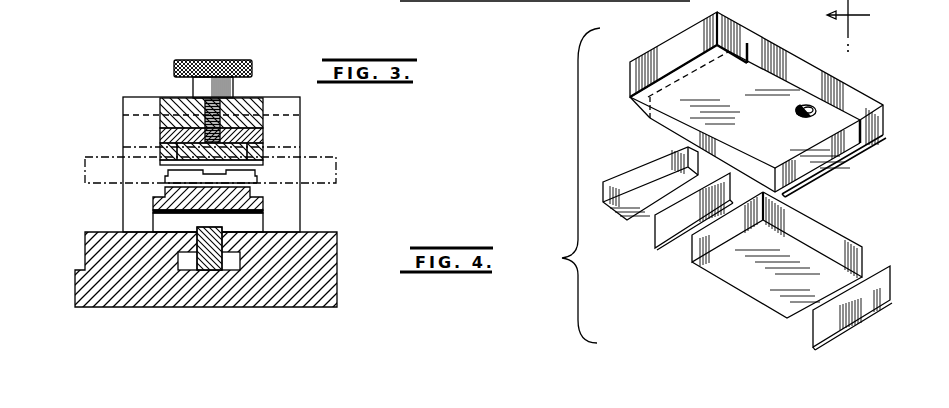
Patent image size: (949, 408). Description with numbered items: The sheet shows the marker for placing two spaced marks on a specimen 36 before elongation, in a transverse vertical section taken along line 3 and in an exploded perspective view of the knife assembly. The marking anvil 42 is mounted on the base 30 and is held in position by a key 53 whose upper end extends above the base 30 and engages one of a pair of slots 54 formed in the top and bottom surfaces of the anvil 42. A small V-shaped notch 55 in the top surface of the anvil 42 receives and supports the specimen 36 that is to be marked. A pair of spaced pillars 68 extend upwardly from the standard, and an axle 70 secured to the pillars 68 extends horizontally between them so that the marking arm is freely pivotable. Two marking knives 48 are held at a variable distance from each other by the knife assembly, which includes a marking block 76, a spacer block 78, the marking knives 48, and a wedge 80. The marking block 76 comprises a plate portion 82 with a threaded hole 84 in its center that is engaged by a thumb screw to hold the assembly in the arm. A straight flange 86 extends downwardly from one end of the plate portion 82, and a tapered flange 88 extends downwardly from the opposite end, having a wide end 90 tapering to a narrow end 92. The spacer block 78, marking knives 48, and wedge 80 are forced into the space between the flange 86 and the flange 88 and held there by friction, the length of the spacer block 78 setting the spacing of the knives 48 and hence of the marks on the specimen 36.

In FIG. 3, the base 30 is at (322, 274).
In FIG. 3, the specimen 36 is at (315, 187).
In FIG. 3, the marking anvil 42 is at (263, 201).
In FIG. 3, the key 53 is at (213, 227).
In FIG. 3, the slots 54 is at (165, 176).
In FIG. 3, the small V-shaped notch 55 is at (258, 180).
In FIG. 3, the pillars 68 is at (125, 108).
In FIG. 3, the axle 70 is at (300, 120).
In FIG. 4, the marking block 76 is at (795, 46).
In FIG. 3, the spacer block 78 is at (262, 150).
In FIG. 4, the spacer block 78 is at (800, 218).
In FIG. 3, the wedge 80 is at (165, 147).
In FIG. 4, the wedge 80 is at (643, 171).
In FIG. 3, the plate portion 82 is at (268, 140).
In FIG. 4, the plate portion 82 is at (817, 80).
In FIG. 4, the threaded hole 84 is at (818, 110).
In FIG. 4, the straight flange 86 is at (843, 152).
In FIG. 4, the tapered flange 88 is at (670, 83).
In FIG. 4, the wide end 90 is at (741, 72).
In FIG. 4, the narrow end 92 is at (651, 118).
In FIG. 4, the marking knives 48 is at (662, 248).
In FIG. 4, the section line 3 is at (848, 26).